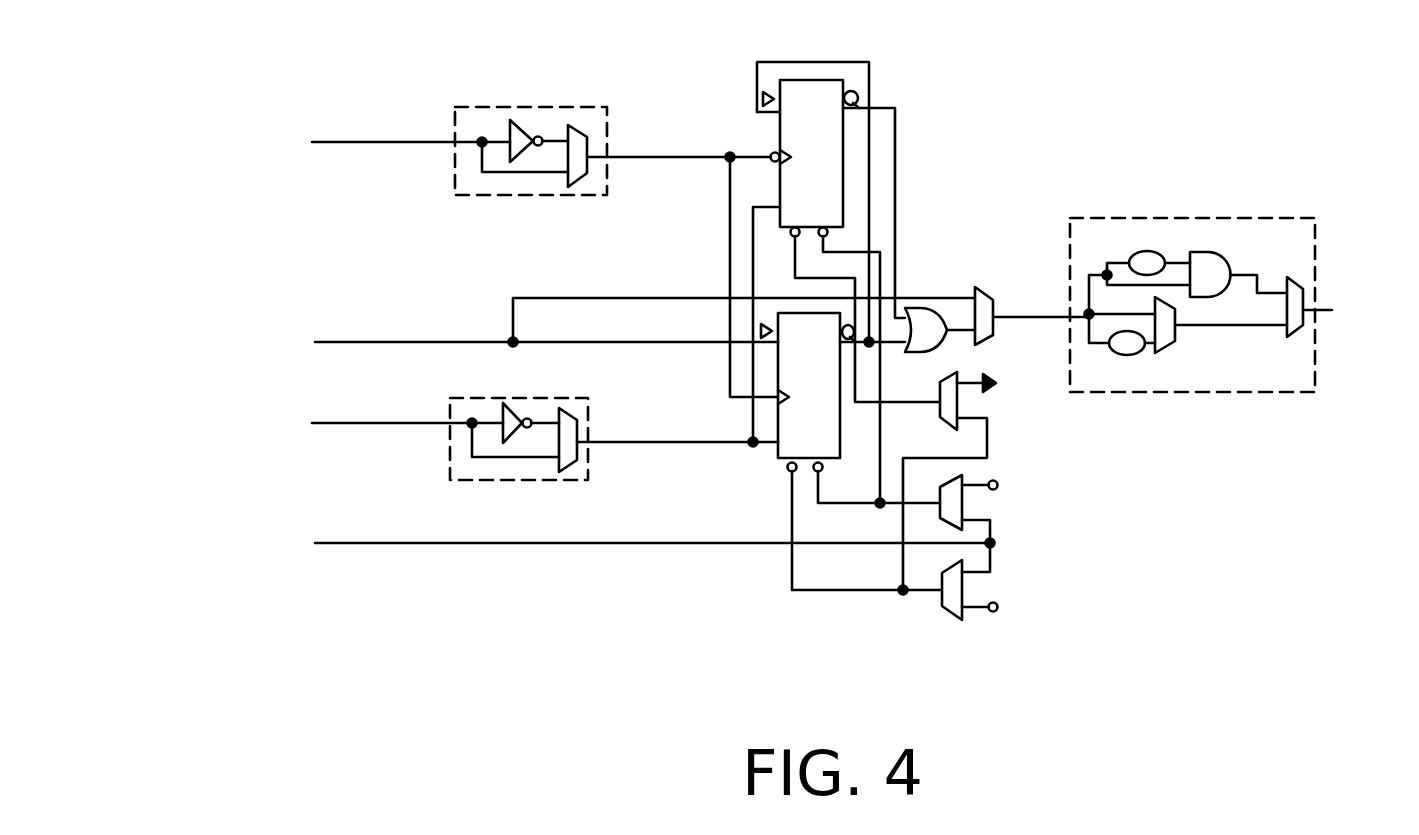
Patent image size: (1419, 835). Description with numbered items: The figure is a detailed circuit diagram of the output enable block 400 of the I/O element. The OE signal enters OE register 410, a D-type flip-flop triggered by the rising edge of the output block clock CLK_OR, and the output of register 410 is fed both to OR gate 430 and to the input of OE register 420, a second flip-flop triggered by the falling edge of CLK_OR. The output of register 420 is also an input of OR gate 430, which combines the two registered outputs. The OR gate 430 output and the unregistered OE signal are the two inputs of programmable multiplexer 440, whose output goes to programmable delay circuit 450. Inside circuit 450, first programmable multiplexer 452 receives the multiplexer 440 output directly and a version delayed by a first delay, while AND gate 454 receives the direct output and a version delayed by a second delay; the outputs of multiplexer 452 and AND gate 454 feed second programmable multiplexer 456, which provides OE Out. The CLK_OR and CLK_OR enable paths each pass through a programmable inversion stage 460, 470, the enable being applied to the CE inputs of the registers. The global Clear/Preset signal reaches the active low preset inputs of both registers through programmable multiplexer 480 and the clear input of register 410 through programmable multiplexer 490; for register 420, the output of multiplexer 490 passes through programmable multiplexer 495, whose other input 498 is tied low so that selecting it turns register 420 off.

The output enable block 400 is at (415, 705).
The OE register 410 is at (843, 455).
The OE register 420 is at (778, 130).
The OR gate 430 is at (912, 352).
The programmable multiplexer 440 is at (986, 292).
The programmable delay circuit 450 is at (1158, 218).
The first programmable multiplexer 452 is at (1168, 353).
The AND gate 454 is at (1208, 252).
The second programmable multiplexer 456 is at (1295, 340).
The programmable inversion stage 460 is at (531, 108).
The programmable inversion stage 470 is at (522, 482).
The programmable multiplexer 480 is at (962, 478).
The programmable multiplexer 490 is at (952, 621).
The programmable multiplexer 495 is at (940, 415).
The input tied low 498 is at (971, 382).